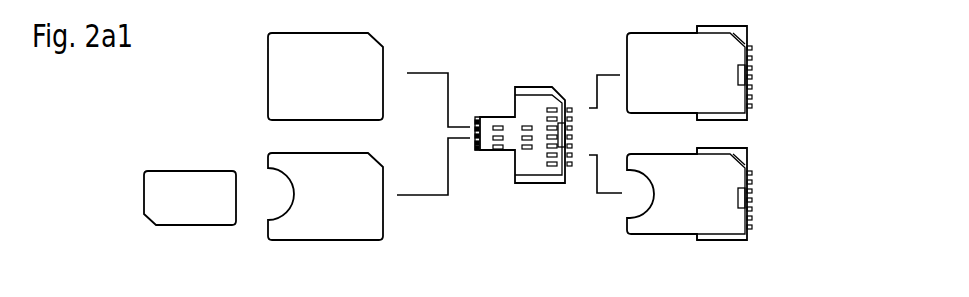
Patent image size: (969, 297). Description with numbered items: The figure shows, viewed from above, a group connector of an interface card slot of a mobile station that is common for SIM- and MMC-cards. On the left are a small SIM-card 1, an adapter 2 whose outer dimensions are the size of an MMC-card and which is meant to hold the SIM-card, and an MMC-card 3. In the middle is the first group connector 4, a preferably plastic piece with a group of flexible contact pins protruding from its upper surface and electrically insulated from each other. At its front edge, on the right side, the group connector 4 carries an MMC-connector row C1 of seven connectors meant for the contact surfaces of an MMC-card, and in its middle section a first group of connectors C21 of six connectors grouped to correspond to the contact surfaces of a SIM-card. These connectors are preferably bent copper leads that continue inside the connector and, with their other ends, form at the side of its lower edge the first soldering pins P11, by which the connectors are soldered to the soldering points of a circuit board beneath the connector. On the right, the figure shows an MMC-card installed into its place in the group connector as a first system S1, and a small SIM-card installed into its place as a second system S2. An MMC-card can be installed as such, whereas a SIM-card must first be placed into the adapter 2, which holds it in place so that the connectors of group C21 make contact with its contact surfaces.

The small SIM-card 1 is at (173, 193).
The adapter 2 is at (275, 230).
The MMC-card 3 is at (267, 95).
The first group connector 4 is at (512, 85).
The first soldering pins P11 is at (570, 110).
The first group of connectors C21 is at (528, 148).
The MMC-connector row C1 is at (552, 166).
The first system S1 is at (759, 60).
The second system S2 is at (759, 198).